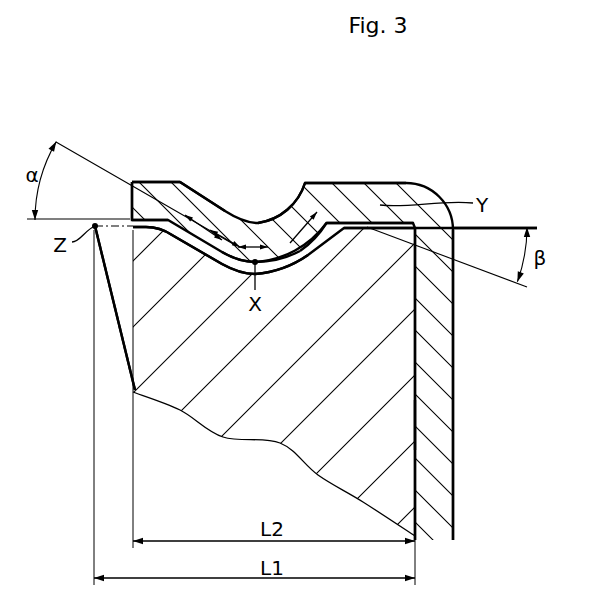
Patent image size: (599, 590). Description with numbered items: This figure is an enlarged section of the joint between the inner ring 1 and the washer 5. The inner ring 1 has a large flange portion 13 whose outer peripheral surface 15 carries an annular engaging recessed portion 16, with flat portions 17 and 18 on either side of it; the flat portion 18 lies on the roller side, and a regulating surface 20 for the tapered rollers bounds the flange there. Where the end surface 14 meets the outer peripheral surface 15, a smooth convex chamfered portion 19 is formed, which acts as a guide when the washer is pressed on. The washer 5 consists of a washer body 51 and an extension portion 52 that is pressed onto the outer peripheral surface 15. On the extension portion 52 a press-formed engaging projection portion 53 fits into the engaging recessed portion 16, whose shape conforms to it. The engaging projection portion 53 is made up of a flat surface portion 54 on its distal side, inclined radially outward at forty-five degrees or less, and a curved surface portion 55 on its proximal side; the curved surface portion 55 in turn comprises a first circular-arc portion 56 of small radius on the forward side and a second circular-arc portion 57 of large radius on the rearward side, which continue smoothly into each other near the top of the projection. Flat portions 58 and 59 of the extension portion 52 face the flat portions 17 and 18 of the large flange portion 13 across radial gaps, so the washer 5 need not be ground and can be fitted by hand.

The inner ring 1 is at (208, 442).
The washer 5 is at (468, 493).
The large flange portion 13 is at (402, 347).
The end surface 14 is at (415, 423).
The outer peripheral surface 15 is at (350, 222).
The engaging recessed portion 16 is at (293, 263).
The flat portion 17 is at (368, 226).
The flat portion 18 is at (143, 226).
The chamfered portion 19 is at (425, 270).
The regulating surface 20 is at (112, 320).
The washer body 51 is at (445, 378).
The extension portion 52 is at (348, 181).
The engaging projection portion 53 is at (285, 180).
The flat surface portion 54 is at (204, 200).
The curved surface portion 55 is at (272, 152).
The first circular-arc portion 56 is at (238, 248).
The second circular-arc portion 57 is at (292, 243).
The flat portion 58 is at (160, 190).
The flat portion 59 is at (327, 193).